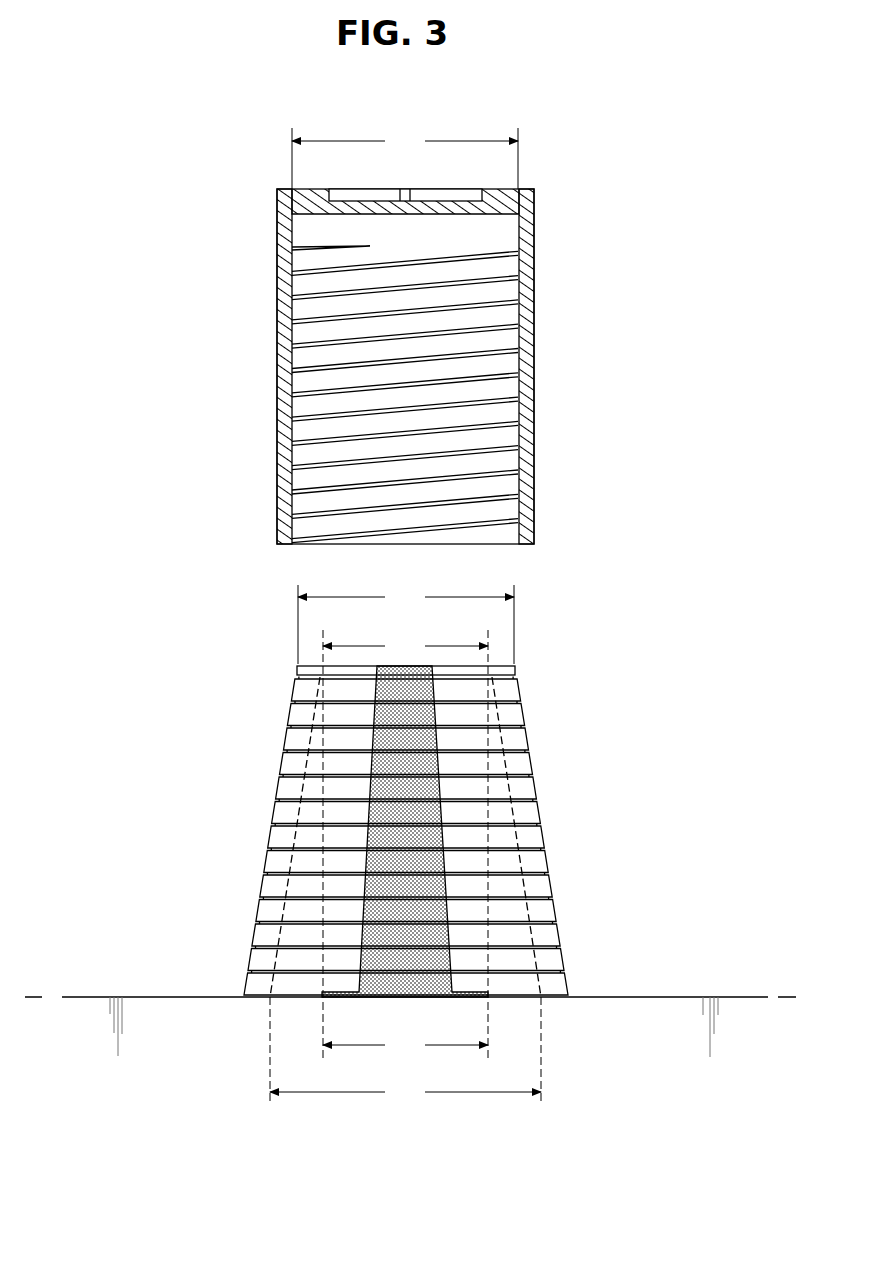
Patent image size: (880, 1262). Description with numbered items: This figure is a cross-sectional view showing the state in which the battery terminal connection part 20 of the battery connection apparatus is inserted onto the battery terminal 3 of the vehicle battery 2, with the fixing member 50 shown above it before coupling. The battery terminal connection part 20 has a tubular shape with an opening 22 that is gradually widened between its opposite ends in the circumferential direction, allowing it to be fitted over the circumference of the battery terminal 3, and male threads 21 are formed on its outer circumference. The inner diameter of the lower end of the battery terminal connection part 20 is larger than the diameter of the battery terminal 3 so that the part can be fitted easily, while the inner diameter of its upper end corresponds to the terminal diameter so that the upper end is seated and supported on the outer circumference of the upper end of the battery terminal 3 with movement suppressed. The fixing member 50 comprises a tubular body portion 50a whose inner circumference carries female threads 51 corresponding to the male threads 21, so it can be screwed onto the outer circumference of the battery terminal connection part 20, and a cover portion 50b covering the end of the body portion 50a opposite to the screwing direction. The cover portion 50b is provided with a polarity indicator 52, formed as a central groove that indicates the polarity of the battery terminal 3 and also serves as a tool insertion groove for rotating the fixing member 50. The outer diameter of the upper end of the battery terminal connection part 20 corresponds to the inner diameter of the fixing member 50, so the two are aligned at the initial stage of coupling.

The battery 2 is at (730, 997).
The battery terminal 3 is at (322, 785).
The battery terminal connection part 20 is at (542, 762).
The male threads 21 is at (289, 739).
The opening 22 is at (434, 870).
The fixing member 50 is at (541, 362).
The body portion 50a is at (277, 397).
The cover portion 50b is at (507, 189).
The female threads 51 is at (328, 340).
The polarity indicator 52 is at (358, 200).